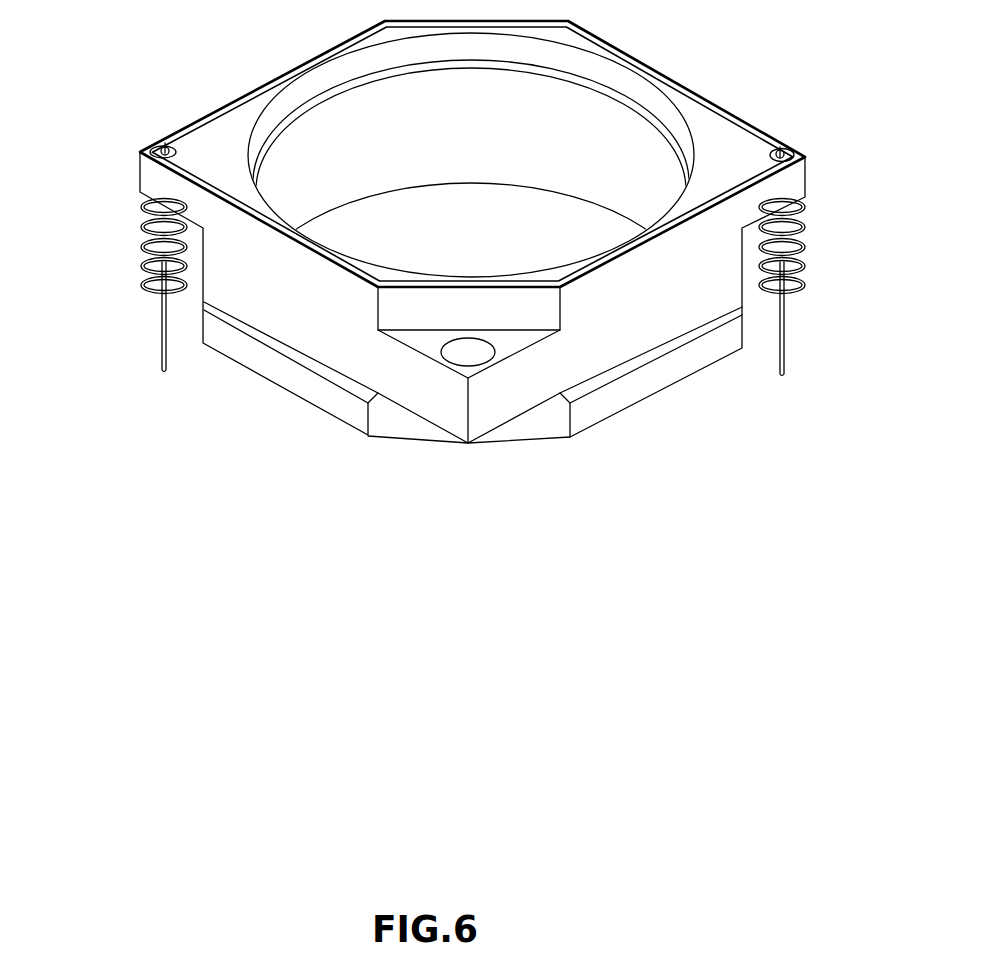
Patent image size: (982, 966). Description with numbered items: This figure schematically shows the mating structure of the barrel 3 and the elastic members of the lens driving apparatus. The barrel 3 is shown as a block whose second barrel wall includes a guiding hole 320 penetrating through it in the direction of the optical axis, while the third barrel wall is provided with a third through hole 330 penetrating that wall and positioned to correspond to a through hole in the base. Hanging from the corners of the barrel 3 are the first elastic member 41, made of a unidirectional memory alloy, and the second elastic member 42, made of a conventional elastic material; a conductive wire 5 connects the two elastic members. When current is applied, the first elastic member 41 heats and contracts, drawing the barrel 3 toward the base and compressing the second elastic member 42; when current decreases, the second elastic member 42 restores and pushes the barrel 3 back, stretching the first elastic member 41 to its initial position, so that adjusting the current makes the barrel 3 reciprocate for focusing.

The conductive wire 5 is at (270, 87).
The third through hole 330 is at (141, 134).
The second elastic member 42 is at (147, 243).
The first elastic member 41 is at (803, 255).
The barrel 3 is at (642, 307).
The guiding hole 320 is at (478, 362).